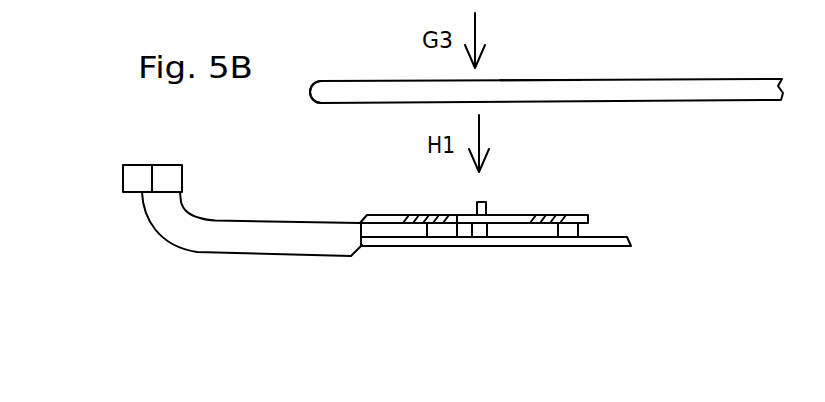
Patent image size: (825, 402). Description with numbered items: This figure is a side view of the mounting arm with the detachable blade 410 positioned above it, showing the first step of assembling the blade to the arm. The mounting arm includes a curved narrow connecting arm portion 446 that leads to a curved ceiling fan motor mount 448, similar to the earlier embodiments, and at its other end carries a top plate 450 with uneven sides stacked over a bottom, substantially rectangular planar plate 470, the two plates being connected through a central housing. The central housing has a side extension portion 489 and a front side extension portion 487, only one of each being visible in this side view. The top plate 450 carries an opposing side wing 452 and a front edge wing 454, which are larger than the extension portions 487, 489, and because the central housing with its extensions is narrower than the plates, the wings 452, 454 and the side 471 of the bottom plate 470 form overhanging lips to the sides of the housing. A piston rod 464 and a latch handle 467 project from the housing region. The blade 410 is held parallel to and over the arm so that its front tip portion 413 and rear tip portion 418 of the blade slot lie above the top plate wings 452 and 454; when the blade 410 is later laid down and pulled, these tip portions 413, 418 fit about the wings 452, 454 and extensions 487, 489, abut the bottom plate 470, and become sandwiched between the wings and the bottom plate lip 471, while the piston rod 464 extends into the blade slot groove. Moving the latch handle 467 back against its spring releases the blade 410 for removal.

The detachable blade 410 is at (694, 92).
The front tip portion of blade slot 413 is at (337, 95).
The rear tip portion of blade slot 418 is at (538, 92).
The curved ceiling fan motor mount 448 is at (137, 178).
The curved narrow connecting arm portion 446 is at (242, 230).
The top plate 450 is at (455, 215).
The side wing of top plate 452 is at (410, 220).
The front edge wing of top plate 454 is at (550, 215).
The piston rod 464 is at (478, 228).
The latch handle 467 is at (485, 205).
The bottom plate 470 is at (630, 245).
The side lip of bottom plate 471 is at (538, 242).
The front side extension portion of central housing 487 is at (568, 228).
The side extension portion of central housing 489 is at (442, 228).